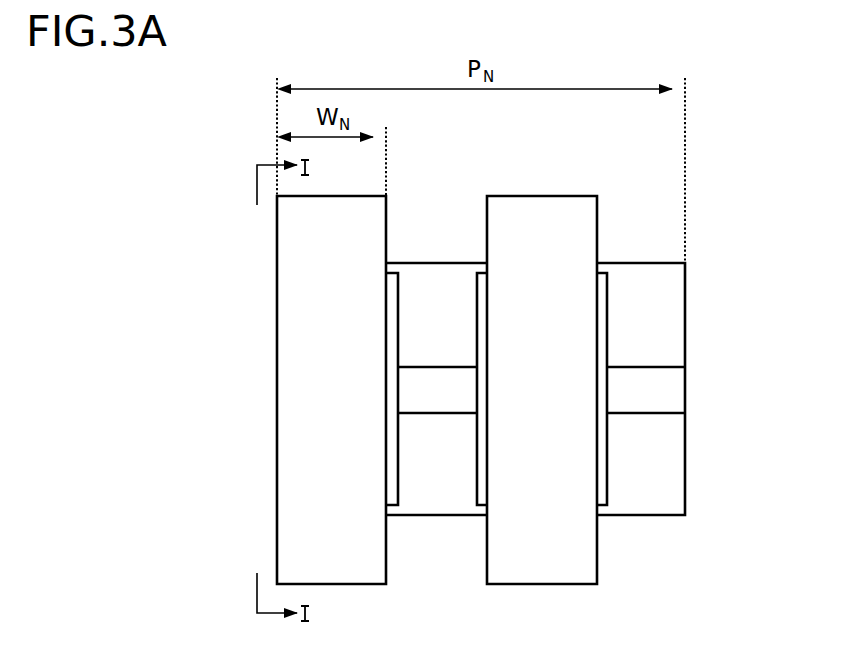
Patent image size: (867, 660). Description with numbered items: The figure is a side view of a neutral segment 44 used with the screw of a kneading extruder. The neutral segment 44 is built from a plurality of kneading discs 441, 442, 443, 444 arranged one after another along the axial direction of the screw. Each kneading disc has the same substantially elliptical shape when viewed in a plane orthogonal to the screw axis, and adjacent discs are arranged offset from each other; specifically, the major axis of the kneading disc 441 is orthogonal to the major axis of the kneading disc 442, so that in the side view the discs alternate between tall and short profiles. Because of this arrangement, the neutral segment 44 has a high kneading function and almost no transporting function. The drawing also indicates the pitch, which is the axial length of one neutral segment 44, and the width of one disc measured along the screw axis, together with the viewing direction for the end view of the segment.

The neutral segment 44 is at (762, 84).
The kneading disc 441 is at (330, 573).
The kneading disc 442 is at (435, 500).
The kneading disc 443 is at (540, 575).
The kneading disc 444 is at (638, 500).